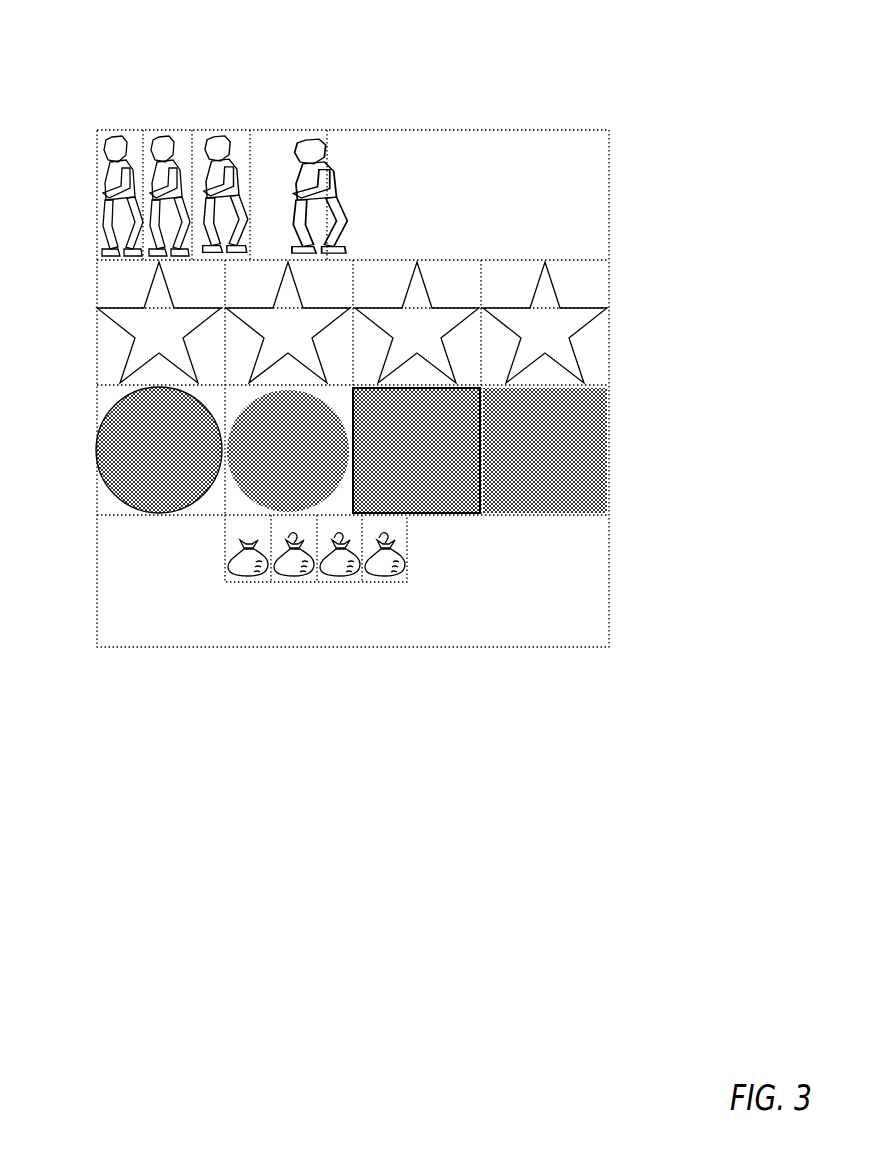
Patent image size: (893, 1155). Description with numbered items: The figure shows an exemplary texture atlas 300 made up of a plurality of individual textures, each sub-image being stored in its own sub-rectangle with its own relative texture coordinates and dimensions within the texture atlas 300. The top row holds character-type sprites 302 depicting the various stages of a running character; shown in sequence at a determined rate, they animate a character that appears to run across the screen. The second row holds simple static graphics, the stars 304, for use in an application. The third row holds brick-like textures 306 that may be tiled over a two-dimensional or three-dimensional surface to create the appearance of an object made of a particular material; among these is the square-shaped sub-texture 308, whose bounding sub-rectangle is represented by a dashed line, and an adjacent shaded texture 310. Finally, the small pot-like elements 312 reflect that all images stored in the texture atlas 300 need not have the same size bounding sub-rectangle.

The texture atlas 300 is at (608, 68).
The sprites 302 is at (108, 131).
The stars 304 is at (108, 306).
The brick-like textures 306 is at (100, 432).
The square-shaped sub-texture 308 is at (430, 510).
The shaded square 310 is at (597, 420).
The small pot-like elements 312 is at (298, 585).